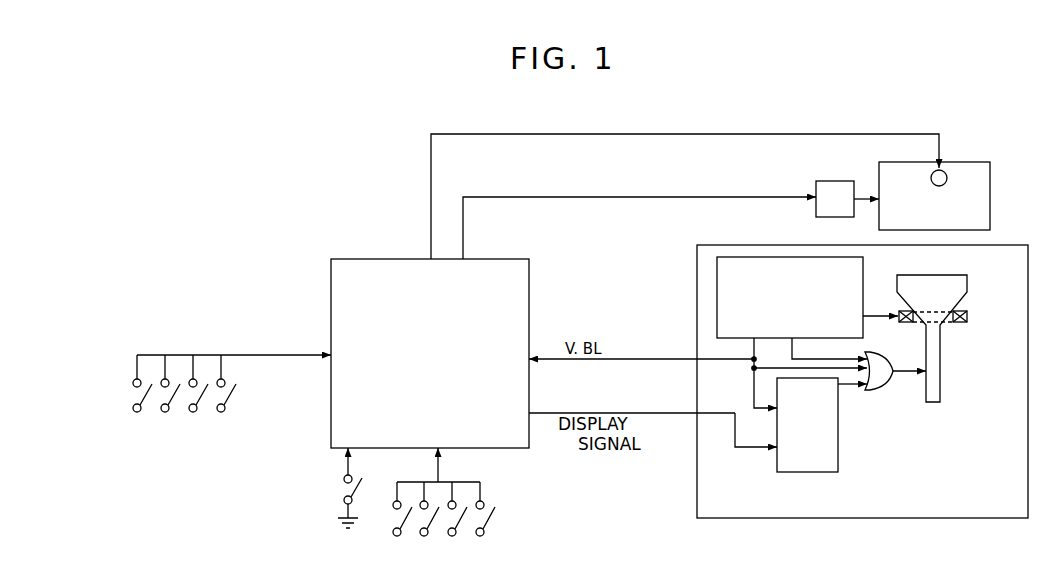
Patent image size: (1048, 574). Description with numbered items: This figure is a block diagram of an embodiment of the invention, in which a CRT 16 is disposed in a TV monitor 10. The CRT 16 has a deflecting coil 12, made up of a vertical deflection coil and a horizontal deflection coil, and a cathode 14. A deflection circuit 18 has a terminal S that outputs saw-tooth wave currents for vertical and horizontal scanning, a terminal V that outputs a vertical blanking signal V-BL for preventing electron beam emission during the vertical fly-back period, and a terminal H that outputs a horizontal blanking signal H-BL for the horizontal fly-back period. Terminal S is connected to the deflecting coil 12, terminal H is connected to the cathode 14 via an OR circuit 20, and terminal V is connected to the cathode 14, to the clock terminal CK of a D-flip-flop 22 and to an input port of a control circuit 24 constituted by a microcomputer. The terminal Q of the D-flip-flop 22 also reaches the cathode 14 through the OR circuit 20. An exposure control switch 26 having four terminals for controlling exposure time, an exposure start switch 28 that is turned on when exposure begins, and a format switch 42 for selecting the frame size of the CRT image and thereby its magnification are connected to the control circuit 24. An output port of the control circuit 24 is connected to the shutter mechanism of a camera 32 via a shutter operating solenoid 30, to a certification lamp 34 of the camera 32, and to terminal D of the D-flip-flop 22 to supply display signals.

The TV monitor 10 is at (825, 518).
The deflecting coil 12 is at (961, 323).
The cathode 14 is at (941, 372).
The CRT 16 is at (975, 297).
The deflection circuit 18 is at (863, 262).
The OR circuit 20 is at (876, 390).
The D-flip-flop 22 is at (839, 466).
The control circuit 24 is at (513, 448).
The exposure control switch 26 is at (497, 522).
The exposure start switch 28 is at (345, 490).
The shutter operating solenoid 30 is at (825, 181).
The camera 32 is at (990, 181).
The certification lamp 34 is at (948, 177).
The format switch 42 is at (175, 351).